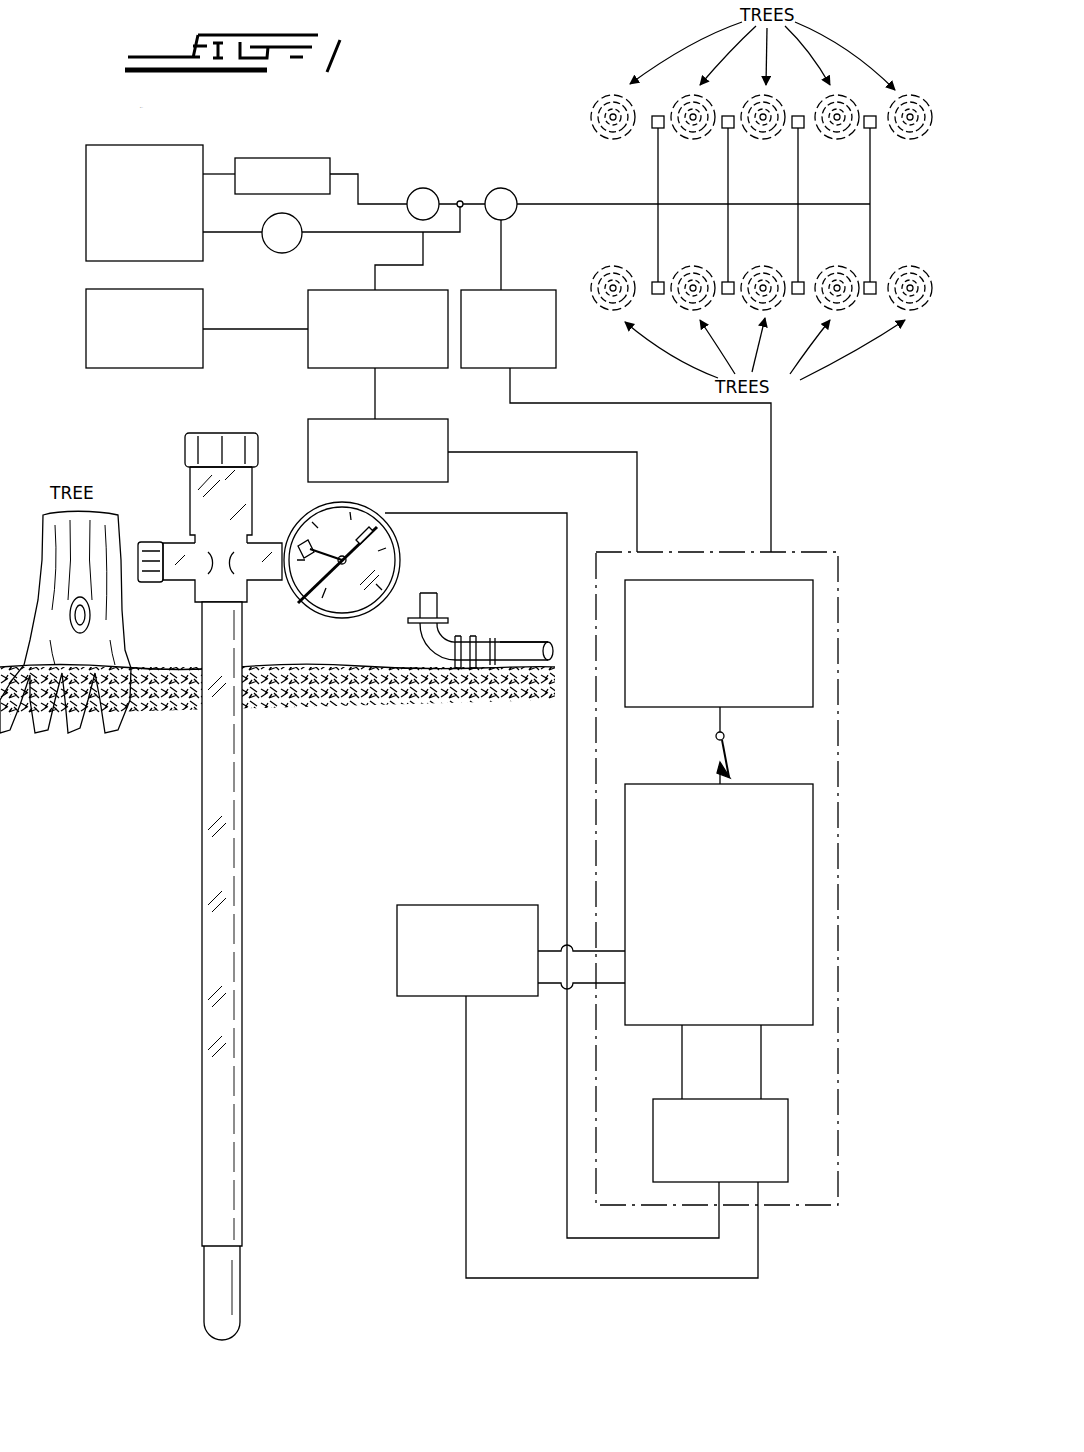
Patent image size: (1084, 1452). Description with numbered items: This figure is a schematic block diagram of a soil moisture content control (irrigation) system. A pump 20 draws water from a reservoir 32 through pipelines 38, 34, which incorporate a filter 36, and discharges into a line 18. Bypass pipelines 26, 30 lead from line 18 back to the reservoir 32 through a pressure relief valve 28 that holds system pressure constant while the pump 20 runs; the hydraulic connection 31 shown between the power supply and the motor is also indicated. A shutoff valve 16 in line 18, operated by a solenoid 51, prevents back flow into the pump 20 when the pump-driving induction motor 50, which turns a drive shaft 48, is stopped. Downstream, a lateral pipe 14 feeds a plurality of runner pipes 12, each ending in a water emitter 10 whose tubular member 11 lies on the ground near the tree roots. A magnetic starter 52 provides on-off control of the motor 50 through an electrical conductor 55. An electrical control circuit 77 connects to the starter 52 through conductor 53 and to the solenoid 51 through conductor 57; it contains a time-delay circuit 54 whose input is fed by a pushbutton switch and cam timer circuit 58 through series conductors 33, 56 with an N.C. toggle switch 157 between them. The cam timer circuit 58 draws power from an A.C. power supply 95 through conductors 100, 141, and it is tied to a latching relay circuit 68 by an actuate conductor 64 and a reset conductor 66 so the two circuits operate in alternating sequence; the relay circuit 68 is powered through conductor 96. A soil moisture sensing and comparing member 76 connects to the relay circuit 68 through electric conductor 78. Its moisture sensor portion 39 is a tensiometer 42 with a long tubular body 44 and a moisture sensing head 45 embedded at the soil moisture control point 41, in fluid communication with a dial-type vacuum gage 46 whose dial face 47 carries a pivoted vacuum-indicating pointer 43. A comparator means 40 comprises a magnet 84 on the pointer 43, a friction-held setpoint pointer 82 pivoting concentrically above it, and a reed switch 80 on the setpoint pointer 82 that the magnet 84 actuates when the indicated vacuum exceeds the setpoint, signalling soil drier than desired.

The water emitter 10 is at (659, 112).
The tubular member 11 is at (518, 640).
The runner pipe 12 is at (656, 163).
The lateral pipe 14 is at (563, 204).
The shutoff valve 16 is at (511, 190).
The line 18 is at (464, 200).
The pump 20 is at (430, 189).
The bypass pipeline 26 is at (336, 236).
The pressure relief valve 28 is at (278, 254).
The bypass pipeline 30 is at (240, 236).
The 240 VAC power supply 31 is at (85, 326).
The reservoir 32 is at (156, 242).
The conductor 33 is at (716, 720).
The pipeline 34 is at (345, 173).
The filter 36 is at (290, 158).
The pipeline 38 is at (213, 173).
The moisture sensor portion 39 is at (354, 567).
The soil moisture content comparator means 40 is at (405, 547).
The soil moisture control point 41 is at (193, 655).
The tensiometer 42 is at (227, 886).
The vacuum-indicating pointer 43 is at (346, 522).
The tubular body 44 is at (242, 995).
The moisture sensing head 45 is at (242, 1296).
The dial-type vacuum gage 46 is at (350, 520).
The dial face 47 is at (353, 592).
The drive shaft 48 is at (426, 250).
The induction motor 50 is at (412, 290).
The solenoid 51 is at (530, 290).
The magnetic starter 52 is at (432, 419).
The conductor 53 is at (520, 452).
The time-delay circuit 54 is at (813, 640).
The electrical conductor 55 is at (380, 400).
The conductor 56 is at (716, 772).
The conductor 57 is at (772, 490).
The pushbutton switch and cam timer circuit 58 is at (792, 784).
The actuate electric conductor 64 is at (762, 1068).
The reset electric conductor 66 is at (682, 1050).
The latching relay circuit 68 is at (790, 1118).
The soil moisture content sensing and comparing member 76 is at (371, 735).
The electrical control circuit 77 is at (823, 550).
The electric conductor 78 is at (570, 528).
The reed switch 80 is at (380, 520).
The setpoint pointer 82 is at (395, 524).
The magnet 84 is at (304, 543).
The A.C. power supply 95 is at (395, 975).
The conductor 96 is at (580, 1278).
The conductor 100 is at (550, 945).
The conductor 141 is at (555, 990).
The N.C. toggle switch 157 is at (726, 750).